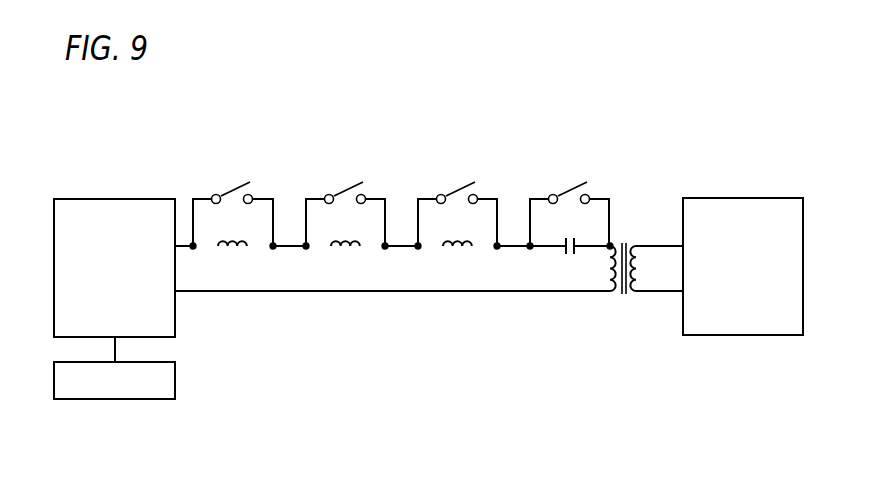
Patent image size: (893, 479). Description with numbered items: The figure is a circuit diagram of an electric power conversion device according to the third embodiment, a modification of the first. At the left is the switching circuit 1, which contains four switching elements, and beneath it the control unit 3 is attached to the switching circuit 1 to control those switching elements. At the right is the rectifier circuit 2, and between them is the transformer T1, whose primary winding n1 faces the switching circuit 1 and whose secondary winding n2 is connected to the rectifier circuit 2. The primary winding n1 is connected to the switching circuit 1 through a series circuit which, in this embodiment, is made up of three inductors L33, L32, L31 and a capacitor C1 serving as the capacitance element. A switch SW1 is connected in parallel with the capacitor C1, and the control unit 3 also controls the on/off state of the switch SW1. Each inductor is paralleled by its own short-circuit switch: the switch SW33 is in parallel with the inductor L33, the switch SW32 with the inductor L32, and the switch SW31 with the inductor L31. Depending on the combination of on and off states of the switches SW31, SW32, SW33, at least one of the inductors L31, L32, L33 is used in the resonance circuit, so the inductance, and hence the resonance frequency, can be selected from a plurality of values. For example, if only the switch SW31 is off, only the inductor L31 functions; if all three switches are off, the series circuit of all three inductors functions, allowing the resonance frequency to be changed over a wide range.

The switching circuit 1 is at (113, 203).
The rectifier circuit 2 is at (740, 200).
The control unit 3 is at (116, 399).
The switch SW33 is at (233, 199).
The switch SW32 is at (345, 199).
The switch SW31 is at (457, 199).
The switch SW1 is at (569, 199).
The inductor L33 is at (233, 230).
The inductor L32 is at (345, 230).
The inductor L31 is at (457, 230).
The capacitor C1 is at (570, 233).
The transformer T1 is at (631, 283).
The primary winding n1 is at (597, 268).
The secondary winding n2 is at (656, 268).